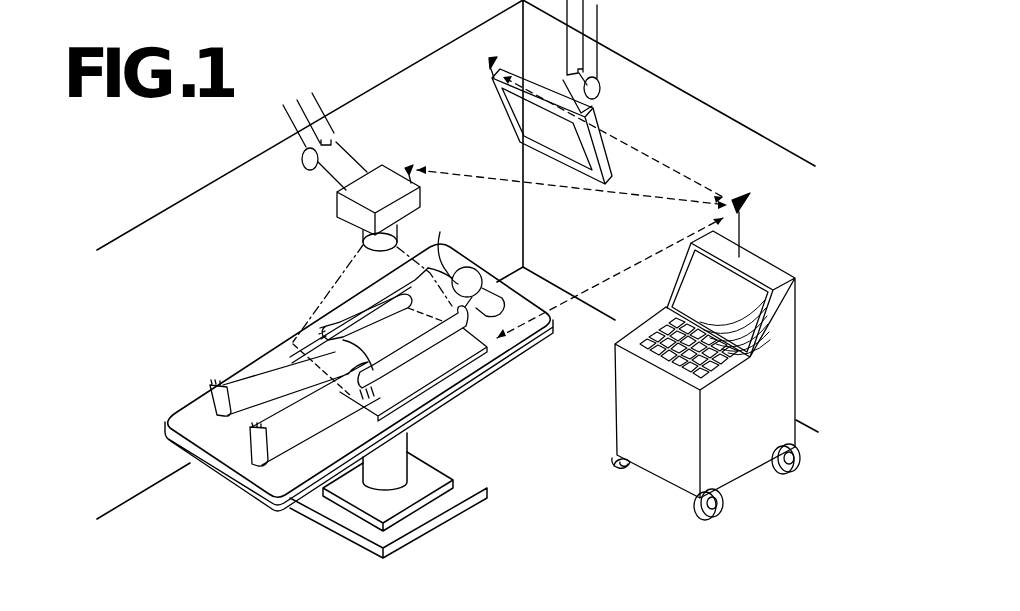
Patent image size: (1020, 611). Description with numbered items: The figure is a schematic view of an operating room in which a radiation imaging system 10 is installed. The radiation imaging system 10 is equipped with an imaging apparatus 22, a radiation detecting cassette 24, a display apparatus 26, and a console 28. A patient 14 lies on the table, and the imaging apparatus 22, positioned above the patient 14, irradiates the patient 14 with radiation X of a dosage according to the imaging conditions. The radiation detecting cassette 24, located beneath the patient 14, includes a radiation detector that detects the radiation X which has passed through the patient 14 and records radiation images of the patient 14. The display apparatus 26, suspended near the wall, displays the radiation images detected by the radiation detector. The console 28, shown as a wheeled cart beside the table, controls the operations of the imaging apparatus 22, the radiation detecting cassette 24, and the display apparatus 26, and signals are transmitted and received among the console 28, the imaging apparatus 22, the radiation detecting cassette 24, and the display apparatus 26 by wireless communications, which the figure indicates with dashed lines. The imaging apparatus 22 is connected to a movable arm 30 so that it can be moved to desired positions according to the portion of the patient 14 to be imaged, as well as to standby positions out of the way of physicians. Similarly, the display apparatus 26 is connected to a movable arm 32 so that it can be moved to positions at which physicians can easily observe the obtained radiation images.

The radiation imaging system 10 is at (504, 236).
The patient 14 is at (245, 387).
The imaging apparatus 22 is at (336, 209).
The radiation detecting cassette 24 is at (438, 382).
The display apparatus 26 is at (506, 126).
The console 28 is at (609, 427).
The movable arm 30 is at (318, 126).
The movable arm 32 is at (598, 32).
The radiation X is at (317, 307).